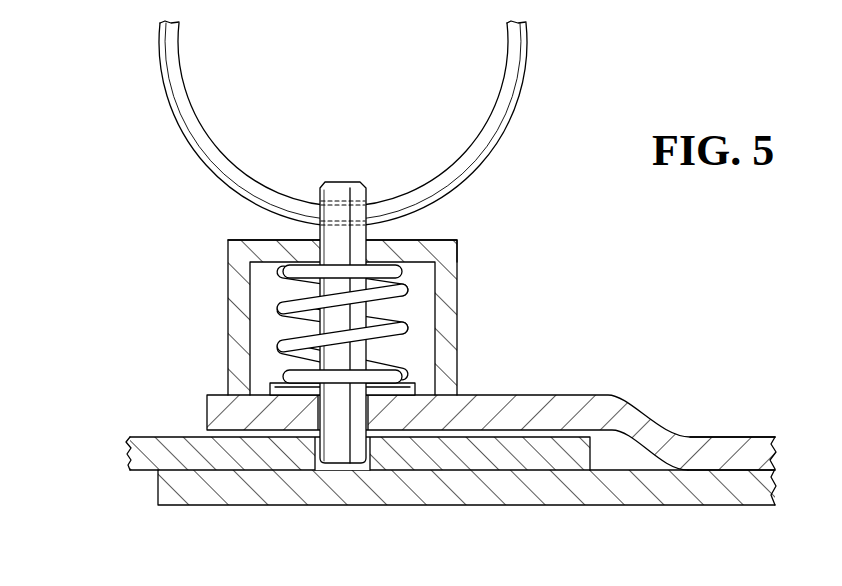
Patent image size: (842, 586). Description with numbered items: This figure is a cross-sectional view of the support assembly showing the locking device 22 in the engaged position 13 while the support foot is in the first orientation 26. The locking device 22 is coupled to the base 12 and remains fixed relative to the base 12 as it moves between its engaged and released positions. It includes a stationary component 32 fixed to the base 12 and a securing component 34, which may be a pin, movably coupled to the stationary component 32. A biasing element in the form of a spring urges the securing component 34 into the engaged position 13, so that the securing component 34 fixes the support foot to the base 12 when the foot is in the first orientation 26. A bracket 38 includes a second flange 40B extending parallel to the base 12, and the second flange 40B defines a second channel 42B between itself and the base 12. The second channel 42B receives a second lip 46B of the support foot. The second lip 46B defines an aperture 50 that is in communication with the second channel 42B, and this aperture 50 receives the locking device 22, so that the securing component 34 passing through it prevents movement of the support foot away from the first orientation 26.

The base 12 is at (505, 492).
The engaged position 13 is at (188, 358).
The locking device 22 is at (224, 337).
The first orientation 26 is at (55, 130).
The stationary component 32 is at (445, 258).
The securing component 34 is at (337, 435).
The bracket 38 is at (727, 447).
The second flange 40B is at (573, 403).
The second channel 42B is at (613, 453).
The second lip 46B is at (130, 454).
The aperture 50 is at (372, 440).